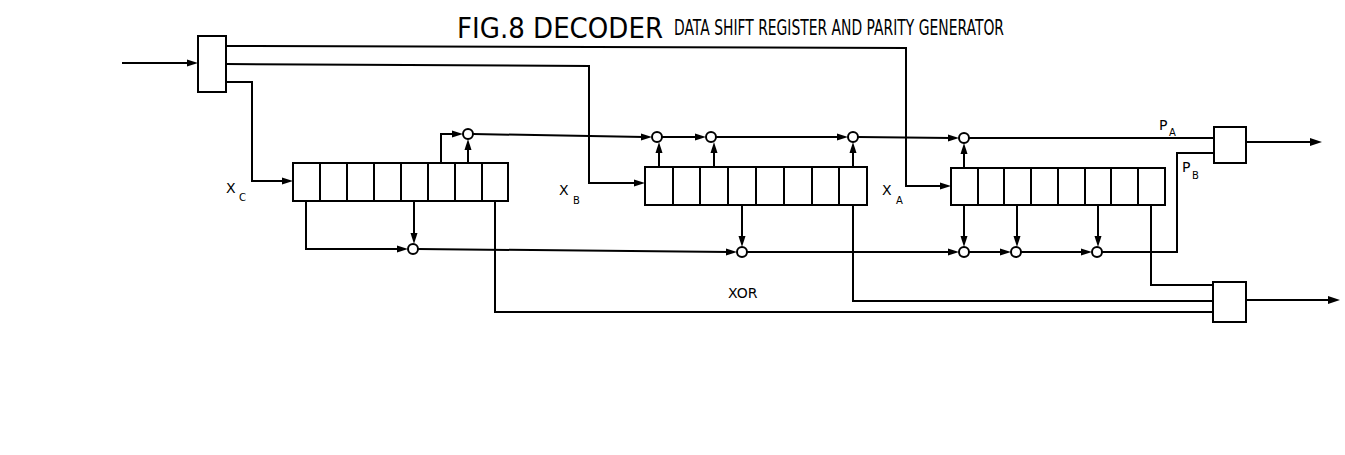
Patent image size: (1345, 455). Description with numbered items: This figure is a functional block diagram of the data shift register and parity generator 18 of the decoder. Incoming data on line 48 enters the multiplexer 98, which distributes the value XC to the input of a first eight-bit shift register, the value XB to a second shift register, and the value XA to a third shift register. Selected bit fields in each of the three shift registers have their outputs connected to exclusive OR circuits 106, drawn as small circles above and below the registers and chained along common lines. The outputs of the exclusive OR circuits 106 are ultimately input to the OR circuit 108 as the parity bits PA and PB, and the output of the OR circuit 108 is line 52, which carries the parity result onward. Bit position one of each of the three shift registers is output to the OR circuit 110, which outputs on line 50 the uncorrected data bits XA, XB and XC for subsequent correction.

The data shift register and parity generator 18 is at (729, 110).
The line 48 is at (160, 66).
The line 50 is at (1316, 306).
The line 52 is at (1282, 146).
The multiplexer 98 is at (223, 94).
The exclusive OR circuits 106 is at (468, 129).
The OR circuit 108 is at (1230, 163).
The OR circuit 110 is at (1226, 322).